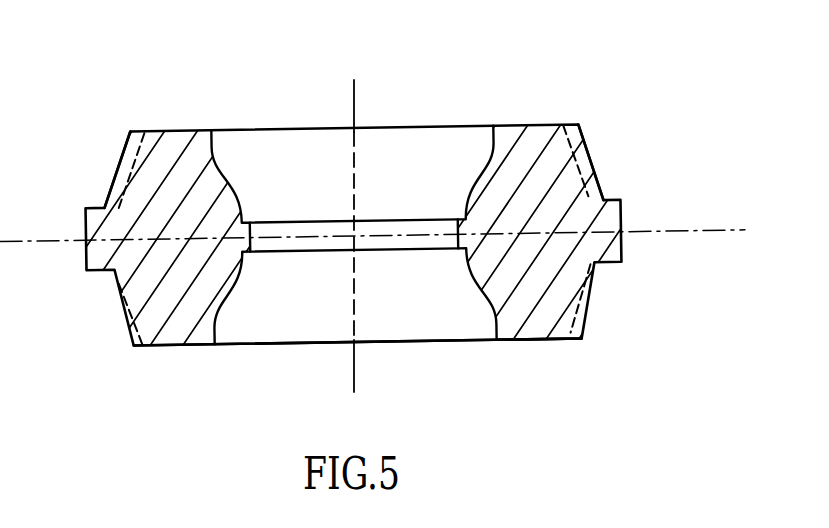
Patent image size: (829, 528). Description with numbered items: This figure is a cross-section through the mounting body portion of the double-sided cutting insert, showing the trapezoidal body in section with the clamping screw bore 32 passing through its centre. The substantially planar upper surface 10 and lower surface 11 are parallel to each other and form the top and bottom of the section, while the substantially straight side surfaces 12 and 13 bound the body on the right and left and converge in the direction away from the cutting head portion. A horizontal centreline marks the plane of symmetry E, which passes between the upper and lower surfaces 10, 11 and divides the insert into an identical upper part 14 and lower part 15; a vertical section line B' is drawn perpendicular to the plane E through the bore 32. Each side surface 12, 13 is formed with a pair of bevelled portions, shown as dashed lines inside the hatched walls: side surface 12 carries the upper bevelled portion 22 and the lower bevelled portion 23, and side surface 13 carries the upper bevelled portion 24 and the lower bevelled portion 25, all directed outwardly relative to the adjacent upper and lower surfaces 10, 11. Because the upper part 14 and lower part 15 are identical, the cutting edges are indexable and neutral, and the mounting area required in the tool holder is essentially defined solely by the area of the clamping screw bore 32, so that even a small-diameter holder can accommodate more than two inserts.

The upper surface 10 is at (172, 130).
The lower surface 11 is at (181, 349).
The side surface 12 is at (622, 186).
The side surface 13 is at (82, 188).
The upper part 14 is at (523, 110).
The lower part 15 is at (536, 353).
The upper bevelled portion 22 is at (590, 152).
The lower bevelled portion 23 is at (597, 297).
The upper bevelled portion 24 is at (127, 153).
The lower bevelled portion 25 is at (115, 300).
The clamping screw bore 32 is at (405, 153).
The section plane line B' is at (382, 206).
The plane of symmetry E is at (677, 229).